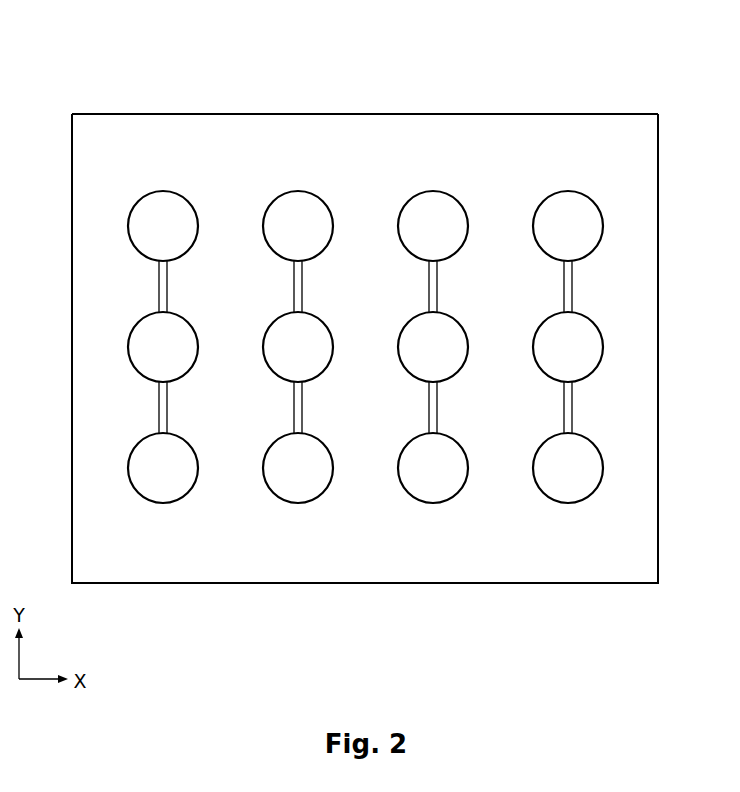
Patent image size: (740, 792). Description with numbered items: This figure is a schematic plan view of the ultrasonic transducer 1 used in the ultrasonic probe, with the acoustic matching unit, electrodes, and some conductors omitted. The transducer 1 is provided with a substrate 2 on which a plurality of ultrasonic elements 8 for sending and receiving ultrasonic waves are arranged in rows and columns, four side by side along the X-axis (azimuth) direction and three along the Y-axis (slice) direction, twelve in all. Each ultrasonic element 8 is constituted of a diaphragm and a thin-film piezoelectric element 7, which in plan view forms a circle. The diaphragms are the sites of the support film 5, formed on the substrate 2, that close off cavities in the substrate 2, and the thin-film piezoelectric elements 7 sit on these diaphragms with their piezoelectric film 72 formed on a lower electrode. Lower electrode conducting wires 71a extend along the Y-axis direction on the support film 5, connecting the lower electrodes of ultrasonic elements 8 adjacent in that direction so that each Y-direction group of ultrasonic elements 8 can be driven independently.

The ultrasonic transducer 1 is at (598, 63).
The substrate 2 is at (658, 156).
The support film 5 is at (632, 122).
The thin-film piezoelectric element 7 is at (390, 340).
The ultrasonic element 8 is at (340, 285).
The lower electrode conducting wire 71a is at (397, 347).
The piezoelectric film 72 is at (188, 222).